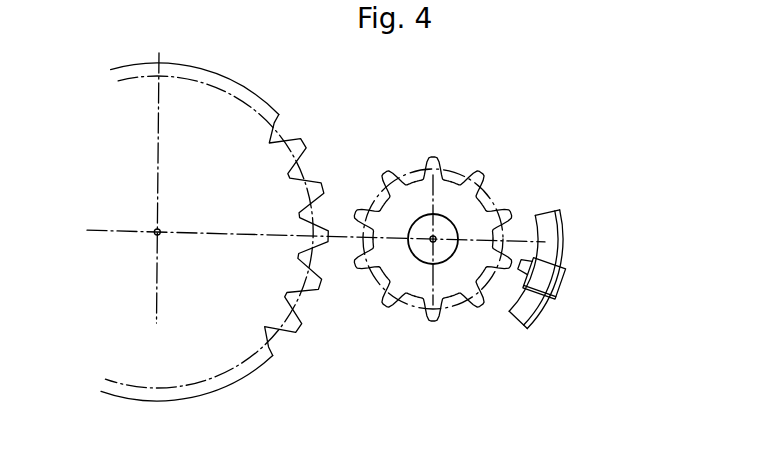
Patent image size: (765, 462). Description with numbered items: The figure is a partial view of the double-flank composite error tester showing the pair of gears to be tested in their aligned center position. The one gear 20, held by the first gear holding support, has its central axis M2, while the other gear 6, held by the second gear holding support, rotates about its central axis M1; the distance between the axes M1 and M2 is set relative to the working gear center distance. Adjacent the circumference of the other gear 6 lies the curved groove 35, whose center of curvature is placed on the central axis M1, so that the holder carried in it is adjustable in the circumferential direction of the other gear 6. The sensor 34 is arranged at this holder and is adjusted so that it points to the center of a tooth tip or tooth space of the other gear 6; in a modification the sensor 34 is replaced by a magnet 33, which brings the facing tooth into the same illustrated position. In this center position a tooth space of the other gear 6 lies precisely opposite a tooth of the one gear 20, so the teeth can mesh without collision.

The one gear 20 is at (223, 122).
The other gear 6 is at (458, 210).
The central axis of the second gear holding support M1 is at (433, 239).
The central axis of the first gear holding support M2 is at (155, 231).
The curved groove 35 is at (550, 233).
The sensor 34 is at (583, 280).
The magnet 33 is at (550, 281).